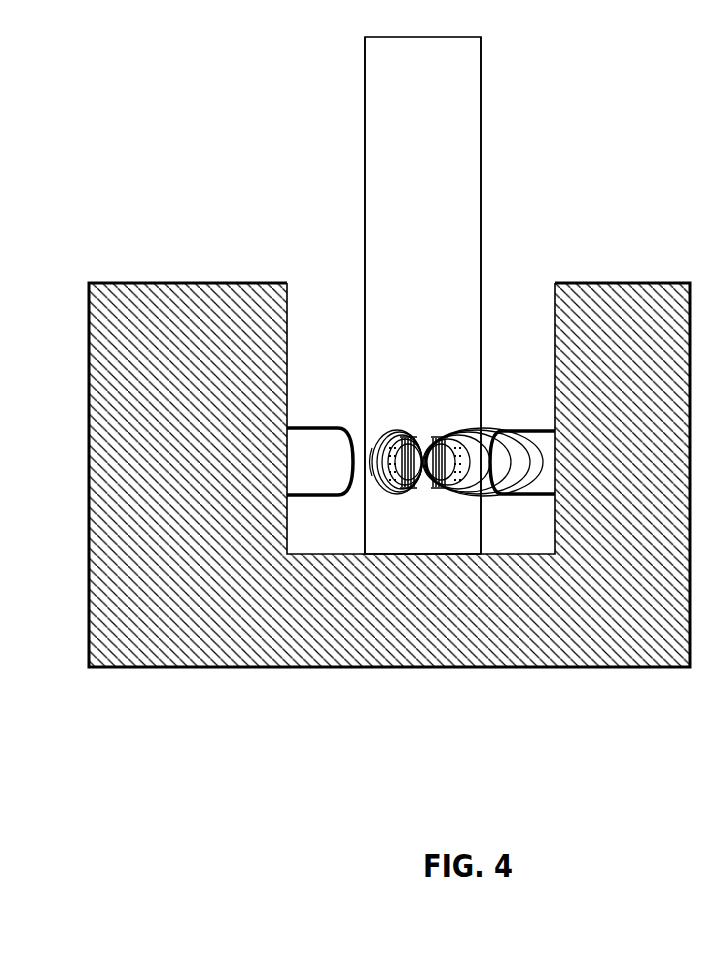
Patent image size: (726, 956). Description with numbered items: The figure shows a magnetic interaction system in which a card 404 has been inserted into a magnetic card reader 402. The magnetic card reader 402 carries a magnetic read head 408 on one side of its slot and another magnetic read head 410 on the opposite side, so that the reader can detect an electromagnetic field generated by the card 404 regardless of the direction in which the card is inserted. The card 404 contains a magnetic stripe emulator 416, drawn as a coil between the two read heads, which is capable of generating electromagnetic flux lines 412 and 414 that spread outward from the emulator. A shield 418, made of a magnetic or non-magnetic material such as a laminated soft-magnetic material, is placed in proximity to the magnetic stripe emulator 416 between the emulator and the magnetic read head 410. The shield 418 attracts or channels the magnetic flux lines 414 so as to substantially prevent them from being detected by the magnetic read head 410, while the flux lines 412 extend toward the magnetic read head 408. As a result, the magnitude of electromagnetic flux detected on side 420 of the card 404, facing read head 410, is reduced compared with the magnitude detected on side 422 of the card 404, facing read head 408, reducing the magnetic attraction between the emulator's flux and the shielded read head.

The magnetic card reader 402 is at (110, 283).
The card 404 is at (380, 37).
The magnetic read head 408 is at (548, 431).
The magnetic read head 410 is at (340, 428).
The electromagnetic flux lines 412 is at (470, 430).
The electromagnetic flux lines 414 is at (415, 430).
The magnetic stripe emulator 416 is at (423, 495).
The shield 418 is at (380, 486).
The side of card 420 is at (365, 261).
The side of card 422 is at (481, 252).